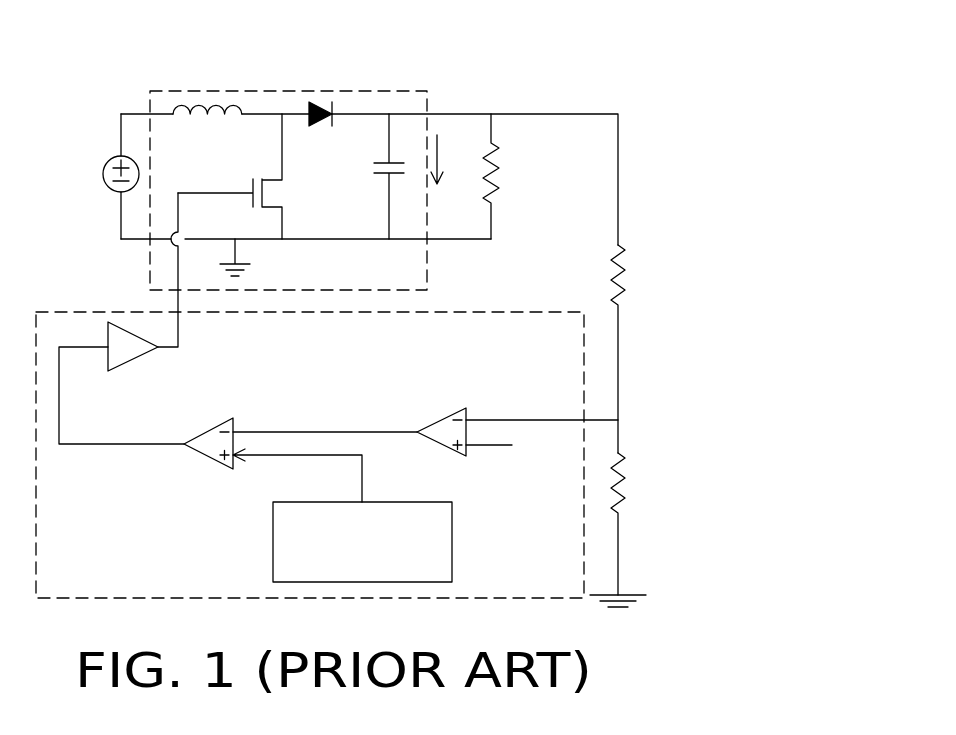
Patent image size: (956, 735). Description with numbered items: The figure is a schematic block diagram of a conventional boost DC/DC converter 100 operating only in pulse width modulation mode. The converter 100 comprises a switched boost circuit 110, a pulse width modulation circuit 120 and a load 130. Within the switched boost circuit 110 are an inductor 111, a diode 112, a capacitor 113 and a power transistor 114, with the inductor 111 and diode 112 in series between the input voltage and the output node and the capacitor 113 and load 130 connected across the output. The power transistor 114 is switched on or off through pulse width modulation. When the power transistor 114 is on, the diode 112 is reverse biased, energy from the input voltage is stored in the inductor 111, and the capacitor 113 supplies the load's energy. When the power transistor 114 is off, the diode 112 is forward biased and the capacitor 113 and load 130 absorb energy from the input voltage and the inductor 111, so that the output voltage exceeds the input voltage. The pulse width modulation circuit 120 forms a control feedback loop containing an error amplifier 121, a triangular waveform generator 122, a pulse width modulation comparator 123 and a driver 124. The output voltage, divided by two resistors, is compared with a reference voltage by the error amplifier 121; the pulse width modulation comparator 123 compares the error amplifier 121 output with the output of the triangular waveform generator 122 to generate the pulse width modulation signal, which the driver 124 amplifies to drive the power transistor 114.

The boost DC/DC converter 100 is at (642, 69).
The switched boost circuit 110 is at (348, 87).
The inductor 111 is at (208, 105).
The diode 112 is at (323, 98).
The capacitor 113 is at (372, 168).
The power transistor 114 is at (287, 194).
The pulse width modulation circuit 120 is at (447, 310).
The error amplifier 121 is at (438, 415).
The triangular waveform generator 122 is at (422, 502).
The pulse width modulation comparator 123 is at (212, 418).
The driver 124 is at (133, 358).
The load 130 is at (508, 180).